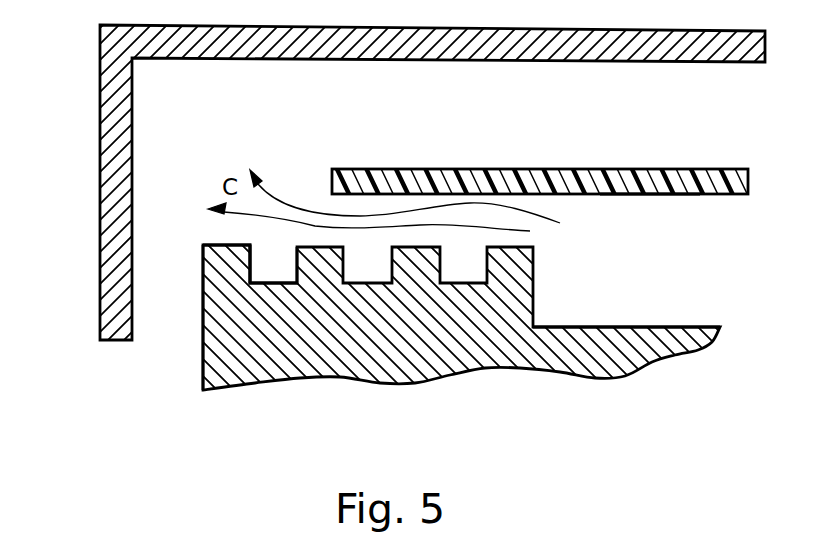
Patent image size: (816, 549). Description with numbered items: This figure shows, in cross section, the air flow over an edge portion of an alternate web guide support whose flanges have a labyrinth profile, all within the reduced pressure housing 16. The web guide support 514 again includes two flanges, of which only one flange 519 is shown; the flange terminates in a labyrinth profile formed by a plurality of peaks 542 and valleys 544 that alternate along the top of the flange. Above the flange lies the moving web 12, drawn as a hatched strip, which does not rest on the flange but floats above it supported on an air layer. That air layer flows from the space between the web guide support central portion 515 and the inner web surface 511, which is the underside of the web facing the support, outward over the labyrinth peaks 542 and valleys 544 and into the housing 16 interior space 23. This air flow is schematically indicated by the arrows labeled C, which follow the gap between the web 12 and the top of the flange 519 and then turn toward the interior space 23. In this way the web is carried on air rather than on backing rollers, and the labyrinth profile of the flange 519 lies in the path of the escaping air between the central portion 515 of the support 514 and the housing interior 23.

The reduced pressure housing 16 is at (100, 103).
The housing interior 23 is at (345, 117).
The moving web 12 is at (596, 170).
The inner web surface 511 is at (637, 210).
The web guide support 514 is at (415, 345).
The web guide support central portion 515 is at (655, 350).
The flange 519 is at (203, 293).
The peaks 542 is at (222, 244).
The valleys 544 is at (276, 284).